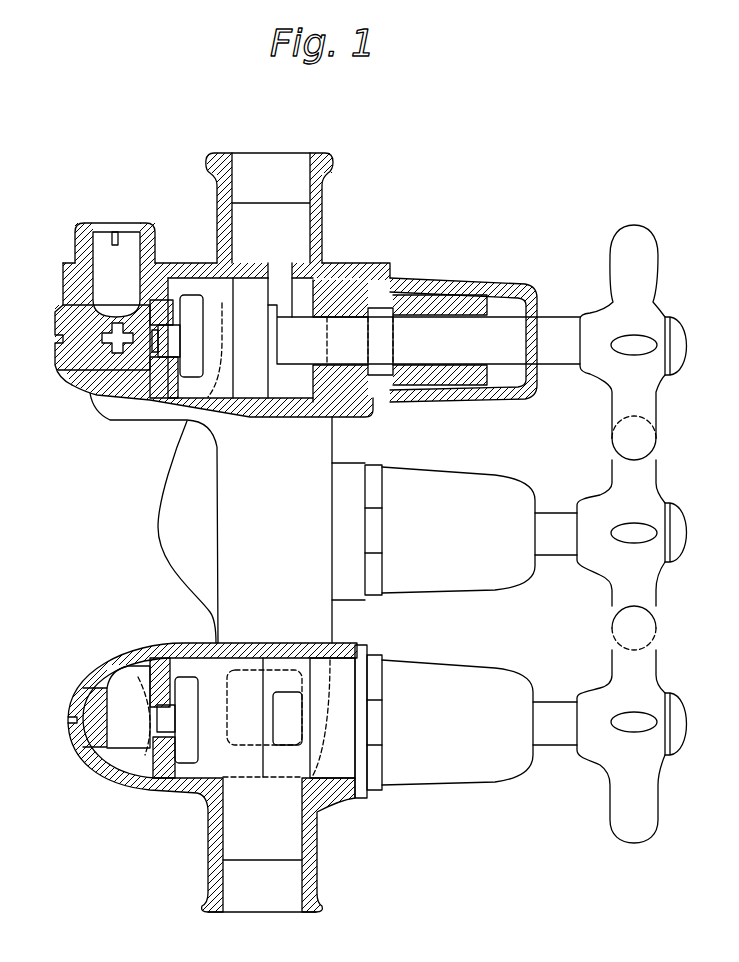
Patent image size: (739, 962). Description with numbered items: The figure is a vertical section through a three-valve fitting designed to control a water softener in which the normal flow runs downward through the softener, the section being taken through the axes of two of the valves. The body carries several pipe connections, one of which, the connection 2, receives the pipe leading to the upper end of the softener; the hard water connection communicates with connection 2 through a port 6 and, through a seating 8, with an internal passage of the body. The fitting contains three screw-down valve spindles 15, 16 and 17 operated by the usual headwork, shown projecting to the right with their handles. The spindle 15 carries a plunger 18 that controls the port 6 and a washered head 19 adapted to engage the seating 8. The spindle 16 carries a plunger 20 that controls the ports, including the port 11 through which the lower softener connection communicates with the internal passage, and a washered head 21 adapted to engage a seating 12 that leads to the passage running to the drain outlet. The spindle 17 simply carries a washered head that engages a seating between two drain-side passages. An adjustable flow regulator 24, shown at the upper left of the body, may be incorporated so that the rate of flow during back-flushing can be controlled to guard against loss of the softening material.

The connection 2 is at (275, 167).
The port 6 is at (278, 272).
The adjustable flow regulator 24 is at (110, 307).
The seating 8 is at (162, 357).
The washered head 19 is at (190, 370).
The plunger 18 is at (252, 387).
The valve spindle 15 is at (550, 332).
The valve spindle 17 is at (563, 543).
The valve spindle 16 is at (557, 737).
The port 11 is at (277, 660).
The plunger 20 is at (247, 760).
The washered head 21 is at (188, 755).
The seating 12 is at (160, 738).